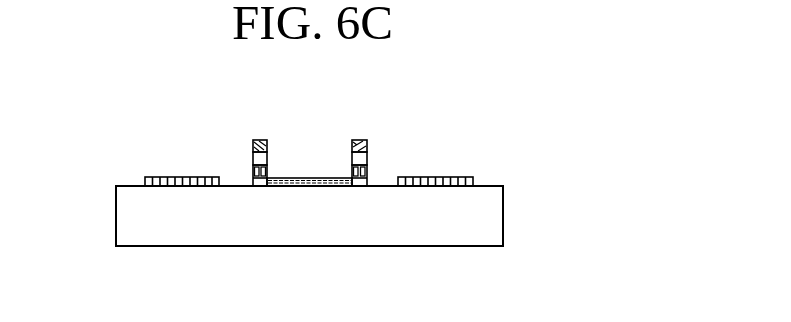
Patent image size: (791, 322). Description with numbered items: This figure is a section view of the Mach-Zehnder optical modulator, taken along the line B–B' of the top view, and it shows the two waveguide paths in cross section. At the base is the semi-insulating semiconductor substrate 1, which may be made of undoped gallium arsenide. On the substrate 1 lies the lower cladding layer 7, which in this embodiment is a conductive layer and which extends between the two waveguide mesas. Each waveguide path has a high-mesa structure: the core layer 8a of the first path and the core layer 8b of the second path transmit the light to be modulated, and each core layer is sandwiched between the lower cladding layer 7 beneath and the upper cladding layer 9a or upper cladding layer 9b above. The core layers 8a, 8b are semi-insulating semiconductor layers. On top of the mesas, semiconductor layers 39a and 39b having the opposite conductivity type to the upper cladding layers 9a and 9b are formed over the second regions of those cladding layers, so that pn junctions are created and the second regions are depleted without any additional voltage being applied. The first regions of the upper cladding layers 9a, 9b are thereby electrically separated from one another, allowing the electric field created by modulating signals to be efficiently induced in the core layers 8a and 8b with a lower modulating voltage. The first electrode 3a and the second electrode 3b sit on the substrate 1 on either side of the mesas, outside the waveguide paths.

The semi-insulating semiconductor substrate 1 is at (472, 228).
The first electrode 3a is at (168, 178).
The second electrode 3b is at (450, 177).
The lower cladding layer 7 is at (308, 183).
The core layer 8a is at (263, 187).
The core layer 8b is at (358, 187).
The upper cladding layer 9a is at (267, 158).
The upper cladding layer 9b is at (351, 160).
The semiconductor layer 39a is at (253, 147).
The semiconductor layer 39b is at (367, 144).